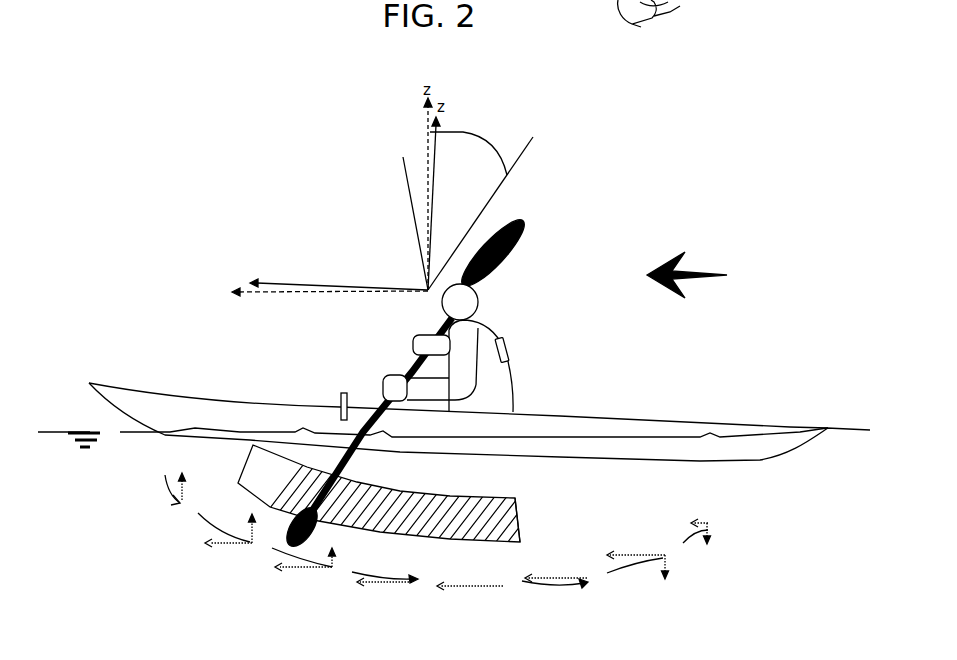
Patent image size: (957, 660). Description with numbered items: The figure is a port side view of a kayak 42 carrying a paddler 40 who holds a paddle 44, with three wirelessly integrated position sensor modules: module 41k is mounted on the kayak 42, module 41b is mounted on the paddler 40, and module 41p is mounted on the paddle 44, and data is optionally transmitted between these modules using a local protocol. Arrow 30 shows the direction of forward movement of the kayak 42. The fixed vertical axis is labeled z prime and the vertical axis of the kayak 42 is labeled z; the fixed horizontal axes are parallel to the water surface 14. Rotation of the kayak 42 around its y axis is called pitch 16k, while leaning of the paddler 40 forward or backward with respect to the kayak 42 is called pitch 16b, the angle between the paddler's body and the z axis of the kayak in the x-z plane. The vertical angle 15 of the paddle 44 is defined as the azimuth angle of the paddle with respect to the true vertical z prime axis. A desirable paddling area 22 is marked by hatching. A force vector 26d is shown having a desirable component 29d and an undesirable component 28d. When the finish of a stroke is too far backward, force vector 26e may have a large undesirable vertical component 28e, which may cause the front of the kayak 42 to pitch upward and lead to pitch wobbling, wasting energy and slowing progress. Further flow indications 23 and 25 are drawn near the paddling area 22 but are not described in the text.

The water surface 14 is at (101, 443).
The vertical angle of paddle 15 is at (465, 132).
The pitch of the paddler 16b is at (430, 205).
The pitch of the kayak 16k is at (269, 286).
The desirable paddling area 22 is at (428, 496).
The upward water flow 23 is at (243, 455).
The water flow at blade exit 25 is at (515, 500).
The force vector 26d is at (291, 556).
The force vector 26e is at (700, 524).
The undesirable component 28d is at (333, 548).
The undesirable vertical component 28e is at (712, 527).
The desirable component 29d is at (277, 570).
The arrow 30 is at (712, 272).
The paddler 40 is at (515, 406).
The module 41b is at (507, 353).
The module 41k is at (341, 398).
The module 41p is at (403, 365).
The kayak 42 is at (663, 423).
The paddle 44 is at (518, 228).